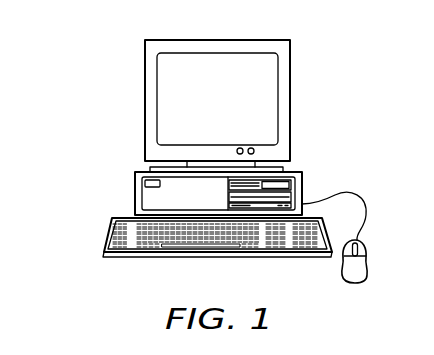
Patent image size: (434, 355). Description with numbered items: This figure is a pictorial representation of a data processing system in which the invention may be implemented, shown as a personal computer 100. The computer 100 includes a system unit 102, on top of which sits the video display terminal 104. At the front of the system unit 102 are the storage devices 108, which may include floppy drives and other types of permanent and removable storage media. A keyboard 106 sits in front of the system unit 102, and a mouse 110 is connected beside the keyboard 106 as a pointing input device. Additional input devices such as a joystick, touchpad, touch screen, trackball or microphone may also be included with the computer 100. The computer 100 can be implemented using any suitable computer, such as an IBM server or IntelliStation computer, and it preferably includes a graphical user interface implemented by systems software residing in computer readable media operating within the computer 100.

The computer 100 is at (80, 85).
The system unit 102 is at (135, 190).
The video display terminal 104 is at (290, 105).
The keyboard 106 is at (128, 257).
The storage devices 108 is at (283, 181).
The mouse 110 is at (353, 284).